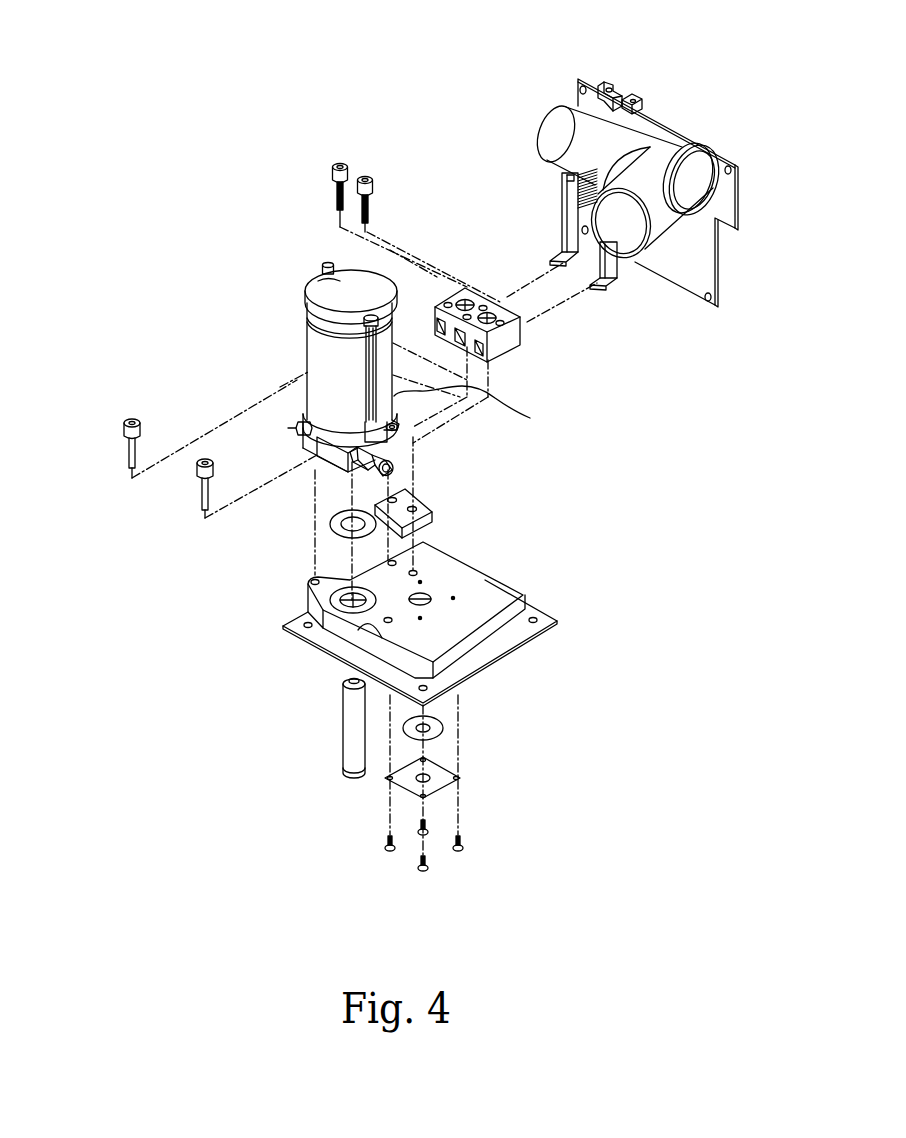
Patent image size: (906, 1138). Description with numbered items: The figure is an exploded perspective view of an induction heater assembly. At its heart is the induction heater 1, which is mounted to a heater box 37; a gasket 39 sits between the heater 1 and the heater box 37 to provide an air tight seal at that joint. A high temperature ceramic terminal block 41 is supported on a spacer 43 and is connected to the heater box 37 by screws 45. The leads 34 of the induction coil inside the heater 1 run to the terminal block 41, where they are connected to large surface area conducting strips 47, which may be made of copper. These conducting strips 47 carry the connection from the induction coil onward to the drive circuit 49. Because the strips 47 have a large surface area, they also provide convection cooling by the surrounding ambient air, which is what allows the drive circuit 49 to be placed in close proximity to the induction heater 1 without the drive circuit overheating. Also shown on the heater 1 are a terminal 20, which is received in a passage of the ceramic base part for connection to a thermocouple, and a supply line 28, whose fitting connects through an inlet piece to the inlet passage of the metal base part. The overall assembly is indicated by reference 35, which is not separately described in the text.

The induction heater 1 is at (325, 357).
The terminal 20 is at (298, 437).
The supply line 28 is at (393, 463).
The leads 34 is at (478, 412).
The pump assembly 35 is at (200, 205).
The heater box 37 is at (480, 585).
The gasket 39 is at (333, 522).
The terminal block 41 is at (510, 340).
The spacer 43 is at (428, 505).
The screws 45 is at (340, 167).
The conducting strips 47 is at (572, 212).
The drive circuit 49 is at (546, 78).